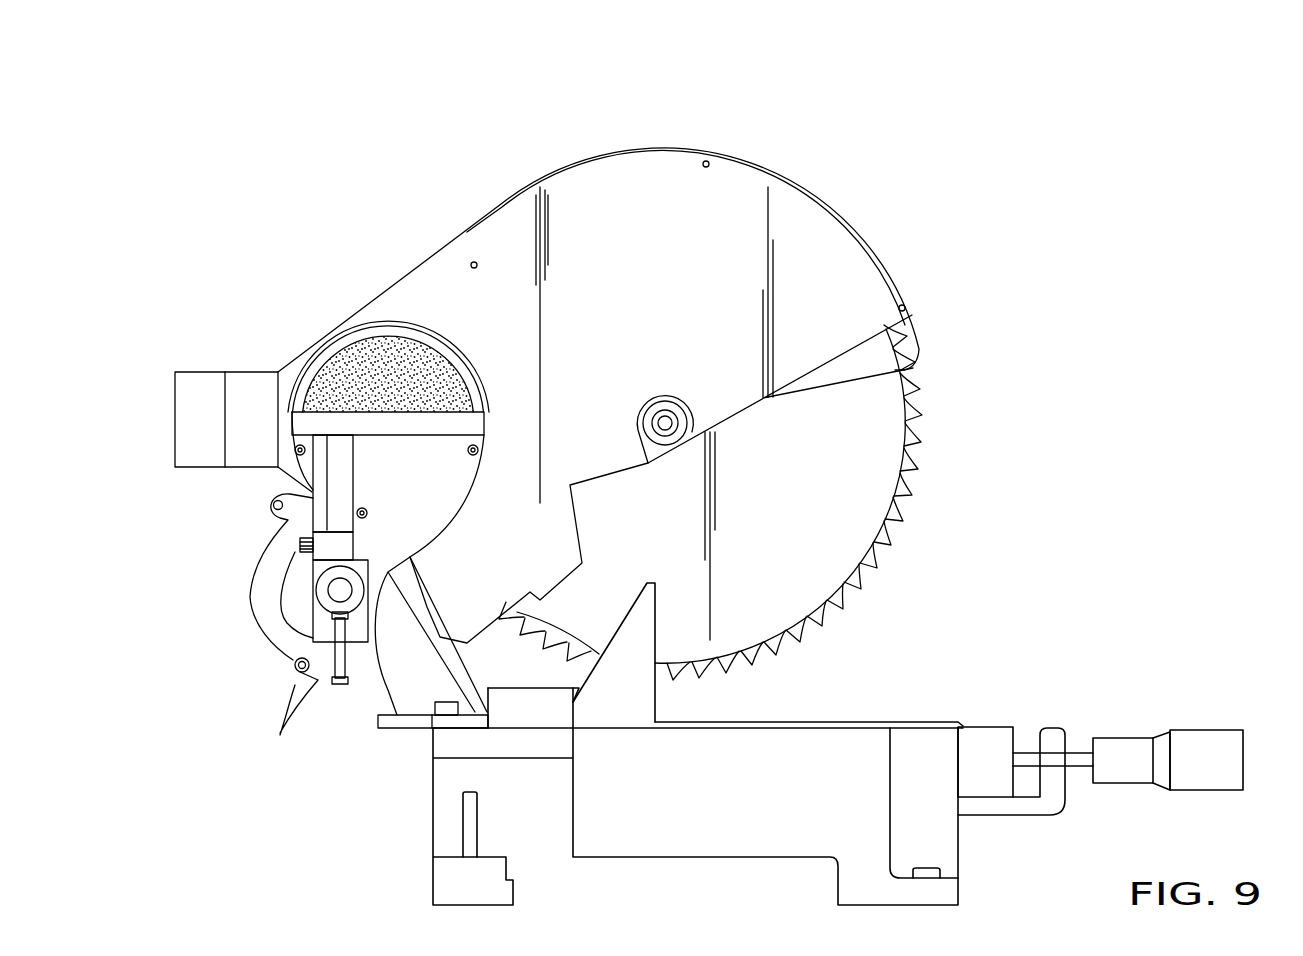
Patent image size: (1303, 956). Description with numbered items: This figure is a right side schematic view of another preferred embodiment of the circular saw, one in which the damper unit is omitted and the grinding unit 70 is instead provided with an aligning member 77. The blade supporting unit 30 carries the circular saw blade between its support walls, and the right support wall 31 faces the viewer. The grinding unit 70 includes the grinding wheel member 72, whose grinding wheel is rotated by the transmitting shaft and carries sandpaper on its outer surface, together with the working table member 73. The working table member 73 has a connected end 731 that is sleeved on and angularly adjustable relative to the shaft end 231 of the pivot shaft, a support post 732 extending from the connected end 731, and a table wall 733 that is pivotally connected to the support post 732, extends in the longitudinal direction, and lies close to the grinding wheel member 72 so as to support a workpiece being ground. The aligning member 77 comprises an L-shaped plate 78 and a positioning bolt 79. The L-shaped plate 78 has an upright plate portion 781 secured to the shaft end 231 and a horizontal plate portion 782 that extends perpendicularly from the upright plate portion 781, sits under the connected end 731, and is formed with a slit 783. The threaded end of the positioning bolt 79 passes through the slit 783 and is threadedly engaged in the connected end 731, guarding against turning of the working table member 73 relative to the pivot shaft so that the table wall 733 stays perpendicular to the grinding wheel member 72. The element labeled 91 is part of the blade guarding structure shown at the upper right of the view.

The blade supporting unit 30 is at (505, 185).
The right support wall 31 is at (608, 185).
The grinding unit 70 is at (405, 330).
The grinding wheel member 72 is at (343, 352).
The working table member 73 is at (460, 390).
The table wall 733 is at (300, 350).
The support post 732 is at (320, 450).
The connected end 731 is at (327, 573).
The shaft end 231 is at (333, 587).
The aligning member 77 is at (300, 605).
The horizontal plate portion 782 is at (293, 648).
The slit 783 is at (312, 702).
The positioning bolt 79 is at (330, 690).
The upright plate portion 781 is at (355, 690).
The L-shaped plate 78 is at (393, 690).
The swing arm 91 is at (923, 320).